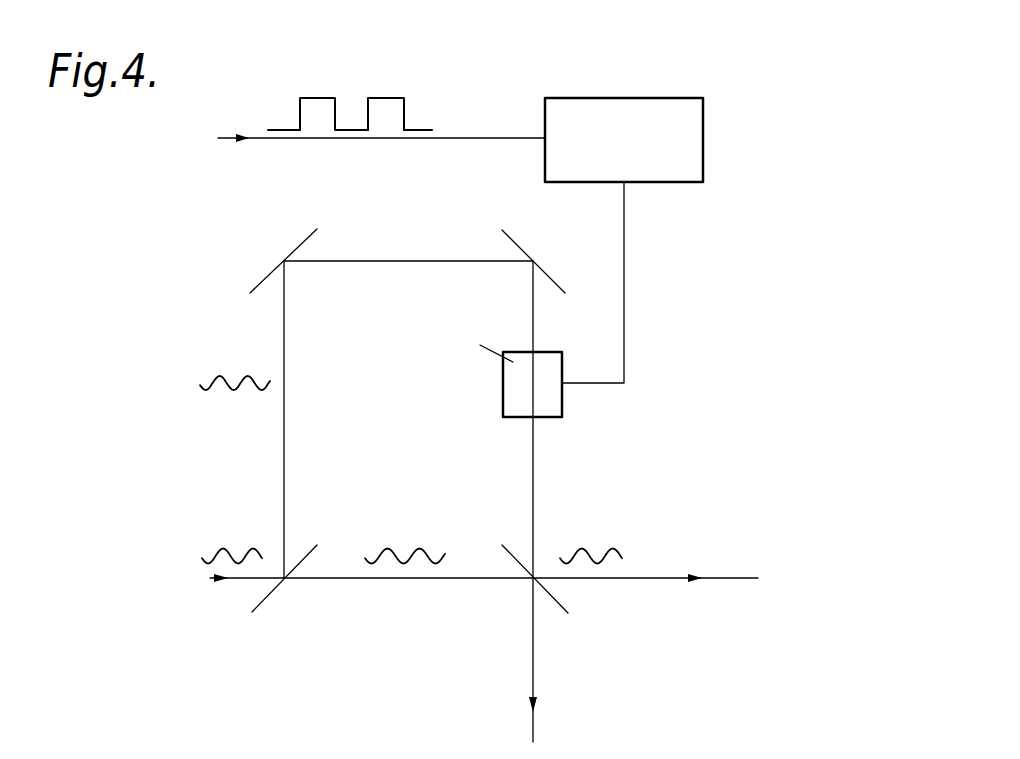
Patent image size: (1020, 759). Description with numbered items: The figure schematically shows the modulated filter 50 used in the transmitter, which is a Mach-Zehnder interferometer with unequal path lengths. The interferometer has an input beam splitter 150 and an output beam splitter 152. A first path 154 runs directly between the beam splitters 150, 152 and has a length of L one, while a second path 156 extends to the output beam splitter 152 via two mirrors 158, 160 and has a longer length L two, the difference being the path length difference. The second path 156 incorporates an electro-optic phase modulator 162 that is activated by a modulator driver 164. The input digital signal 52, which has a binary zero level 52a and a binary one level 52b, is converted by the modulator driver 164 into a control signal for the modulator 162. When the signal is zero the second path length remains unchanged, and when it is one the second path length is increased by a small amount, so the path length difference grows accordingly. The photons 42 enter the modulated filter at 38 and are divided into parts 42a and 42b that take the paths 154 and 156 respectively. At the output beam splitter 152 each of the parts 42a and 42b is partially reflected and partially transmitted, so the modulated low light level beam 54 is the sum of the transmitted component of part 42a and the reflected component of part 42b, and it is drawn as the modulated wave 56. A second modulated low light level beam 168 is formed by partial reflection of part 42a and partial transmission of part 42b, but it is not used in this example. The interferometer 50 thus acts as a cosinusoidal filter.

The input 38 is at (245, 582).
The photons 42 is at (225, 547).
The part of photons 42a is at (388, 547).
The part of photons 42b is at (232, 393).
The modulated filter 50 is at (383, 74).
The input digital signal 52 is at (296, 101).
The binary 0 level 52a is at (432, 128).
The binary 1 level 52b is at (388, 97).
The modulated low light level beam 54 is at (741, 580).
The modulated light wave 56 is at (603, 545).
The input beam splitter 150 is at (275, 590).
The output beam splitter 152 is at (512, 560).
The first path 154 is at (383, 582).
The second path 156 is at (285, 437).
The mirror 158 is at (298, 247).
The mirror 160 is at (522, 247).
The electro-optic phase modulator 162 is at (565, 393).
The modulator driver 164 is at (705, 100).
The second modulated low light level beam 168 is at (537, 697).